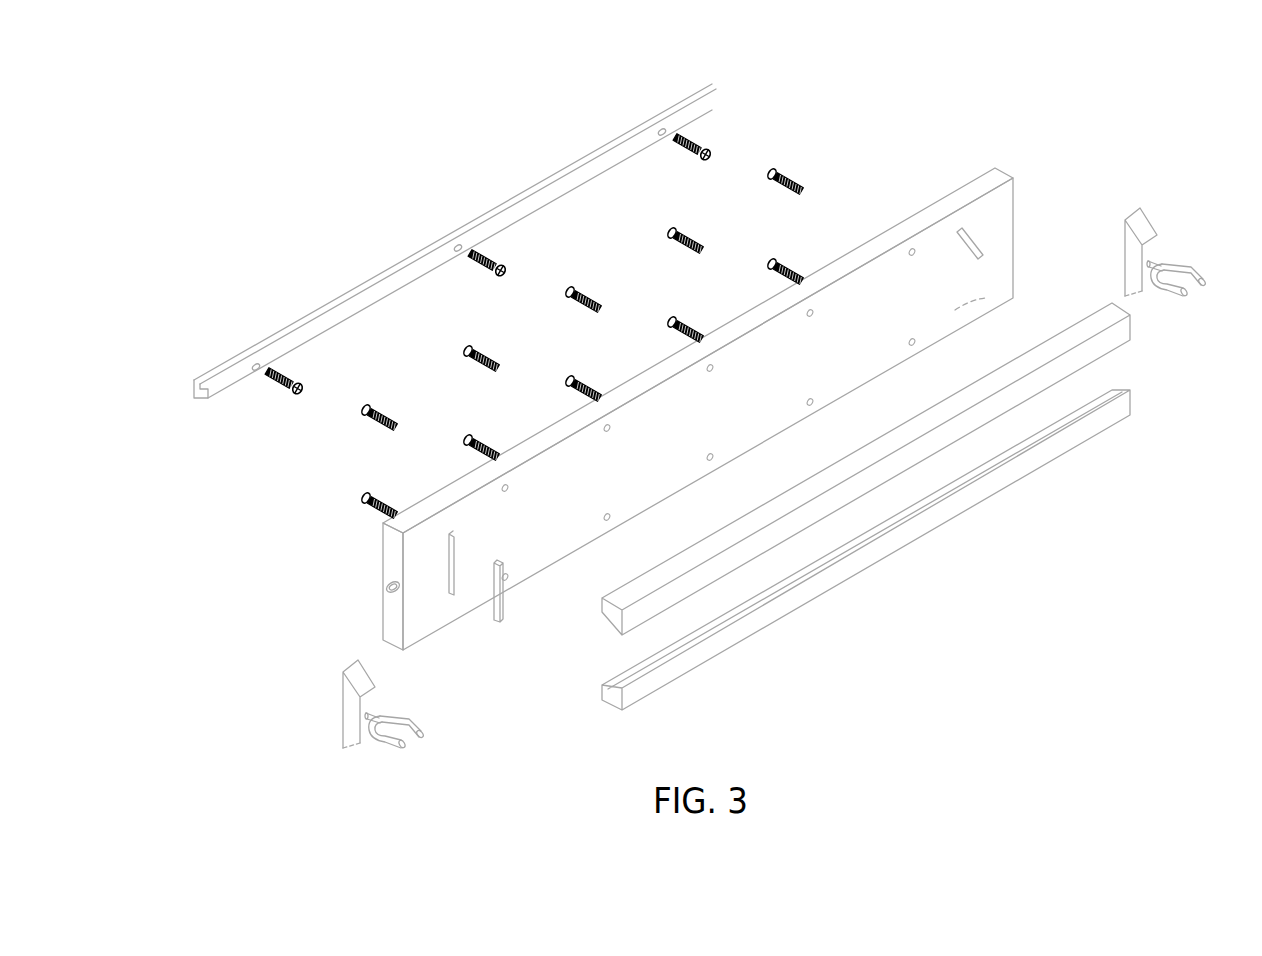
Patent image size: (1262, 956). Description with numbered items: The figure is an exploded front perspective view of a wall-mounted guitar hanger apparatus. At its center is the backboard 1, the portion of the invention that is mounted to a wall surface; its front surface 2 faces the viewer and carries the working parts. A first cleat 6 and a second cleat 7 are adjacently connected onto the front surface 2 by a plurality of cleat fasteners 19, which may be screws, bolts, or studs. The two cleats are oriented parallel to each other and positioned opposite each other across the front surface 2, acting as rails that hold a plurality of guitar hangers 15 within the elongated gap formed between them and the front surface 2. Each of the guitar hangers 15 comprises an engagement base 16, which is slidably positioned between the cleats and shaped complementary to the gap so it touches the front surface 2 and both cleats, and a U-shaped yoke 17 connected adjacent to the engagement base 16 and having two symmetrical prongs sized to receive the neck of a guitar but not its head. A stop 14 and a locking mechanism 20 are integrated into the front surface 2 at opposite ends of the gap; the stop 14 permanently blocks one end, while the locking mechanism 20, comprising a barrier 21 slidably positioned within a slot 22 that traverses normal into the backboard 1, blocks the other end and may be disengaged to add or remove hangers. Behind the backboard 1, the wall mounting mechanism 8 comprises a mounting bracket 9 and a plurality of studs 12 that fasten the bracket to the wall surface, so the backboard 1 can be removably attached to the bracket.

The backboard 1 is at (673, 420).
The front surface 2 is at (547, 558).
The first cleat 6 is at (855, 462).
The second cleat 7 is at (869, 553).
The wall mounting mechanism 8 is at (501, 253).
The mounting bracket 9 is at (206, 400).
The plurality of studs 12 is at (703, 158).
The stop 14 is at (984, 297).
The plurality of guitar hangers 15 is at (773, 492).
The engagement base 16 is at (350, 726).
The U-shaped yoke 17 is at (381, 718).
The plurality of cleat fasteners 19 is at (788, 191).
The locking mechanism 20 is at (366, 607).
The barrier 21 is at (496, 618).
The slot 22 is at (457, 557).